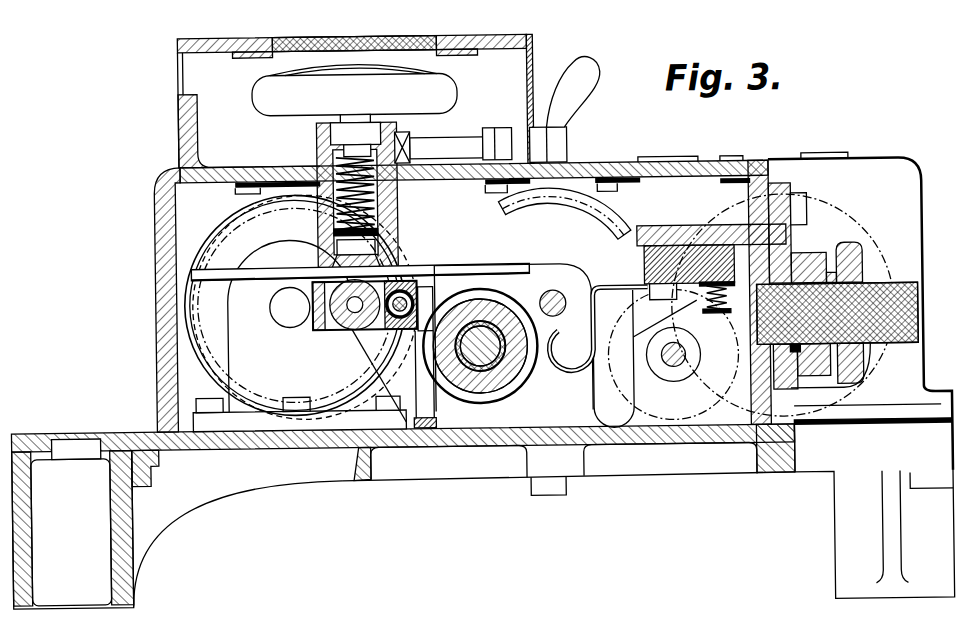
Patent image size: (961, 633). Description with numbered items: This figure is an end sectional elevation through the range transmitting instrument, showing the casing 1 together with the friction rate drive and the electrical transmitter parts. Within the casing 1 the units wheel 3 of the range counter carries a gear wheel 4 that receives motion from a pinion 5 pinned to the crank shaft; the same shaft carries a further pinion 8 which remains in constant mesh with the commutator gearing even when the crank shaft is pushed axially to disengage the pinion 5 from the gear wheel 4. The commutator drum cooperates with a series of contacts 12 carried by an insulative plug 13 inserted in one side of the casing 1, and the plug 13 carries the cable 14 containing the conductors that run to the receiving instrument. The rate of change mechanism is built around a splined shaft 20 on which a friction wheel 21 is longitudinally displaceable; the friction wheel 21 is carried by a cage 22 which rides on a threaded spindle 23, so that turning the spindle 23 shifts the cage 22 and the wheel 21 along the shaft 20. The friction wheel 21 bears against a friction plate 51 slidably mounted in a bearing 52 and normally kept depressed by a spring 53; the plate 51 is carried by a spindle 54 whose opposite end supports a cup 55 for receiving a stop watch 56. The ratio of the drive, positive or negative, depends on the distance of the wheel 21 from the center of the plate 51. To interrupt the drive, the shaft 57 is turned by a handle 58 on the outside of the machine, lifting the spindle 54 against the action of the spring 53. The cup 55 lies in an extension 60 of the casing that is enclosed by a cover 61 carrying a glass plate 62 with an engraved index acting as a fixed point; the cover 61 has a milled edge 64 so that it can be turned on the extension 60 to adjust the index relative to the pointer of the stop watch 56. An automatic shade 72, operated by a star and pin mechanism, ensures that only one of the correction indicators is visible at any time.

The casing 1 is at (625, 174).
The units wheel 3 is at (208, 391).
The gear wheel 4 is at (186, 283).
The pinion 5 is at (453, 299).
The further pinion 8 is at (472, 298).
The contacts 12 is at (596, 328).
The insulative plug 13 is at (782, 240).
The cable 14 is at (775, 319).
The splined shaft 20 is at (323, 277).
The friction wheel 21 is at (350, 324).
The cage 22 is at (317, 317).
The threaded spindle 23 is at (380, 351).
The friction plate 51 is at (266, 273).
The bearing 52 is at (398, 262).
The spring 53 is at (387, 207).
The spindle 54 is at (355, 135).
The cup 55 is at (355, 94).
The stop watch 56 is at (306, 67).
The shaft 57 is at (444, 146).
The handle 58 is at (577, 101).
The extension of the casing 60 is at (195, 146).
The cover 61 is at (487, 53).
The glass plate 62 is at (350, 50).
The milled edge 64 is at (537, 44).
The automatic shade 72 is at (556, 200).